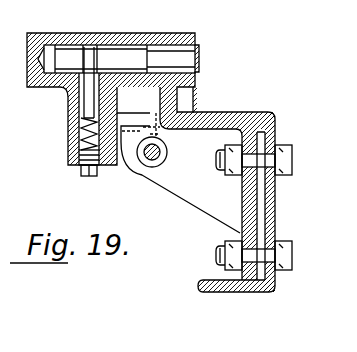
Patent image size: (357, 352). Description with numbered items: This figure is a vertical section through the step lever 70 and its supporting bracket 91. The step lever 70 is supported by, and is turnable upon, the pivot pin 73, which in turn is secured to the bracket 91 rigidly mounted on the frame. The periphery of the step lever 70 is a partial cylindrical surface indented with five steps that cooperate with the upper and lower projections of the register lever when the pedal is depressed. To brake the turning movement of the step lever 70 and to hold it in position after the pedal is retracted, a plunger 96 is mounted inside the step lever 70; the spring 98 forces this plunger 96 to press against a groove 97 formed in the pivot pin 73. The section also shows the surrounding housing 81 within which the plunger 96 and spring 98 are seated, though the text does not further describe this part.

The housing body 81 is at (77, 34).
The groove 97 is at (99, 34).
The pivot pin 73 is at (133, 52).
The bracket 91 is at (177, 100).
The plunger 96 is at (82, 107).
The spring 98 is at (72, 147).
The step lever 70 is at (115, 167).